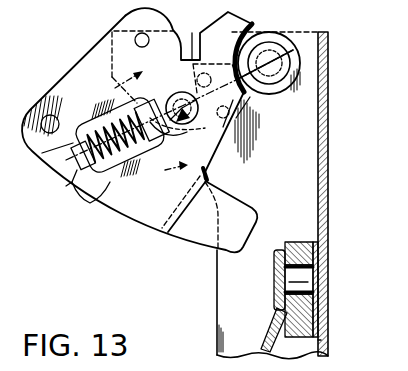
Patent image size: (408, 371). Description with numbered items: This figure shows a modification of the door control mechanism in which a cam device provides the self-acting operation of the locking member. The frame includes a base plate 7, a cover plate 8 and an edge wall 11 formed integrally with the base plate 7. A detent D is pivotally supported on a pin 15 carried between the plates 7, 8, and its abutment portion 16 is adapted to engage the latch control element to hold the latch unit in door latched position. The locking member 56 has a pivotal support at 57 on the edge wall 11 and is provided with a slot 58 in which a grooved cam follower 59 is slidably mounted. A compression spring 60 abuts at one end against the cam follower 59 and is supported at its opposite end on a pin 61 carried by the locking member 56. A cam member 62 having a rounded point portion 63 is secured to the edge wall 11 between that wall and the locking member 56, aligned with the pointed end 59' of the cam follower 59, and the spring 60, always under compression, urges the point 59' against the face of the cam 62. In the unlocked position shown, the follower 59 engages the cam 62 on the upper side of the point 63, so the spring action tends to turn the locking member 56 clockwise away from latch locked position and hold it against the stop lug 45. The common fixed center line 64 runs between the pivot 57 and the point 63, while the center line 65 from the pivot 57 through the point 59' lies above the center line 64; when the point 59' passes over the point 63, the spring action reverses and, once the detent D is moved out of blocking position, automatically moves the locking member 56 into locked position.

The base plate 7 is at (329, 102).
The cover plate 8 is at (264, 344).
The edge wall 11 is at (223, 293).
The pin 15 is at (313, 277).
The abutment portion 16 is at (178, 123).
The stop lug 45 is at (203, 32).
The locking member 56 is at (78, 64).
The pivotal support 57 is at (268, 55).
The slot 58 is at (182, 93).
The cam follower 59 is at (202, 195).
The pointed end 59' is at (175, 67).
The compression spring 60 is at (93, 193).
The pin 61 is at (42, 153).
The cam member 62 is at (255, 112).
The rounded point portion 63 is at (184, 131).
The common fixed center line 64 is at (249, 100).
The center line 65 is at (71, 180).
The detent D is at (321, 340).